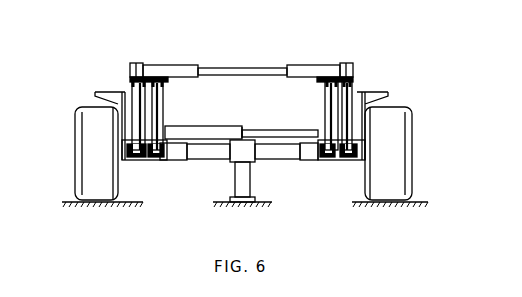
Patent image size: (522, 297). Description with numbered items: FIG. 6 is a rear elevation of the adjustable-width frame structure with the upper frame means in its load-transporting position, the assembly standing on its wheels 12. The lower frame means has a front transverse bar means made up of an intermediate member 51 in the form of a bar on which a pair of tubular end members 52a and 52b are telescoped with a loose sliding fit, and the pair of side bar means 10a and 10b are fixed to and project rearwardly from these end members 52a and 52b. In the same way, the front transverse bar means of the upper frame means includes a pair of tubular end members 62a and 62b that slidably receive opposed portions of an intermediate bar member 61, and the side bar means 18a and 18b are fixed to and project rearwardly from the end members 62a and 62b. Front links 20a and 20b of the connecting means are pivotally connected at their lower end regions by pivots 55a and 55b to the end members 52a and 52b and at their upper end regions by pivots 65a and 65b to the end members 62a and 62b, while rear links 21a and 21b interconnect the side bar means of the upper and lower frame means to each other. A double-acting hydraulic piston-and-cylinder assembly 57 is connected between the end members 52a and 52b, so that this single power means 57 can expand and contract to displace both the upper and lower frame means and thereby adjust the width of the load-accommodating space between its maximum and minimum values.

The wheel 12 is at (82, 155).
The side bar means 10a is at (357, 163).
The side bar means 10b is at (128, 161).
The side bar means 18a is at (350, 63).
The side bar means 18b is at (132, 63).
The front link 20a is at (323, 114).
The front link 20b is at (164, 118).
The rear link 21a is at (348, 93).
The rear link 21b is at (133, 94).
The intermediate member 51 is at (209, 160).
The end member 52a is at (300, 160).
The end member 52b is at (196, 160).
The pivot 55a is at (327, 160).
The pivot 55b is at (157, 160).
The double-acting piston-and-cylinder assembly 57 is at (226, 127).
The intermediate bar member 61 is at (254, 68).
The tubular end member 62a is at (316, 65).
The tubular end member 62b is at (167, 65).
The pivot 65a is at (316, 82).
The pivot 65b is at (169, 82).